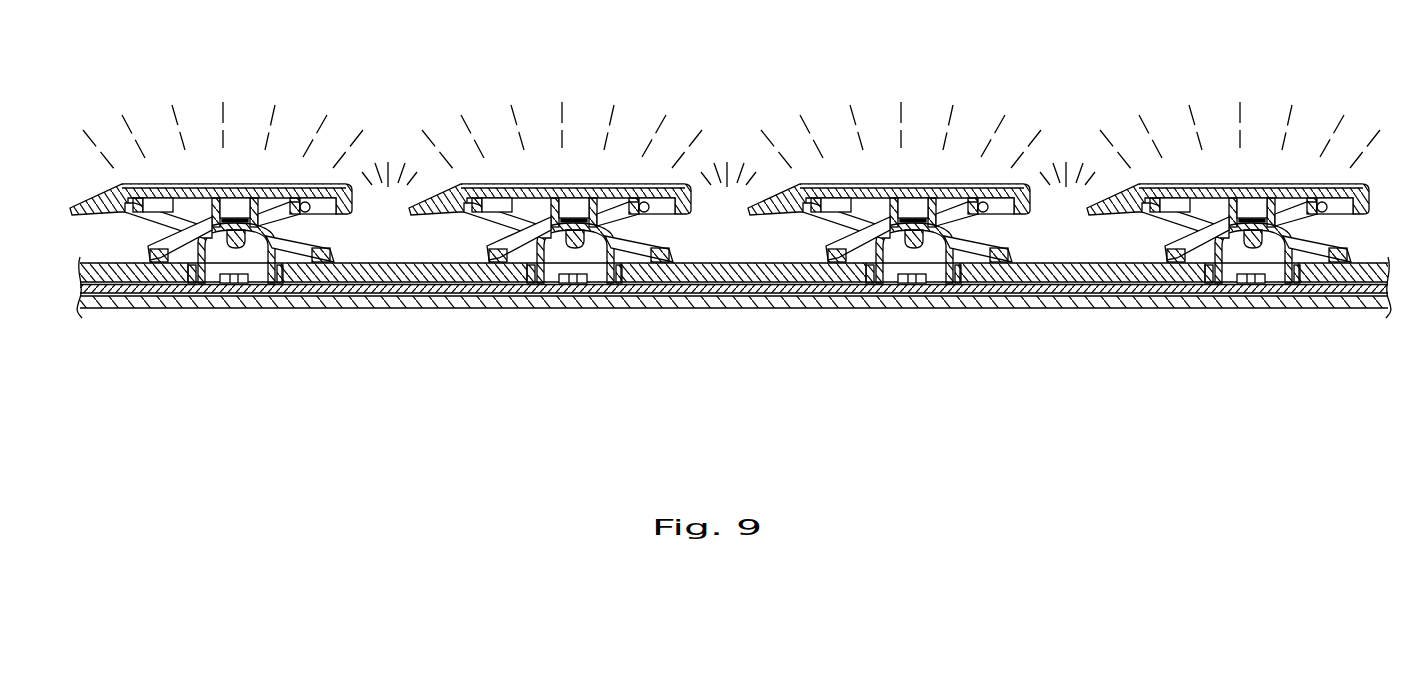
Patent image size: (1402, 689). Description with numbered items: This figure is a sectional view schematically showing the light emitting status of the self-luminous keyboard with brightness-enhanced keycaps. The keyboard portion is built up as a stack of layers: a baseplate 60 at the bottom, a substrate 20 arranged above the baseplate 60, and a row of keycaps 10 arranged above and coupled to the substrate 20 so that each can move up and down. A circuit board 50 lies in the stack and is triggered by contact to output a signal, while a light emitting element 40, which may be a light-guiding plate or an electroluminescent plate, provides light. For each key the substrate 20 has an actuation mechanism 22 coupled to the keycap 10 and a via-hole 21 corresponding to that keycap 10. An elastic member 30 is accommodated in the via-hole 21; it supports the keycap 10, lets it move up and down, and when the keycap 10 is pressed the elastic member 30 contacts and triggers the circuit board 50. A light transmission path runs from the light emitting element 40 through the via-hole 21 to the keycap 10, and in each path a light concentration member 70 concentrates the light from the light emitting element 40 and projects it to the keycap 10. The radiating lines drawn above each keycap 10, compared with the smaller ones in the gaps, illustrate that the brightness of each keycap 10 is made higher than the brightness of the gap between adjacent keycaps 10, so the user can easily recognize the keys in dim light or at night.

The keycap 10 is at (170, 188).
The substrate 20 is at (381, 264).
The via-hole 21 is at (281, 283).
The actuation mechanism 22 is at (284, 212).
The elastic member 30 is at (199, 283).
The light emitting element 40 is at (383, 296).
The circuit board 50 is at (332, 293).
The baseplate 60 is at (135, 308).
The light concentration member 70 is at (189, 283).